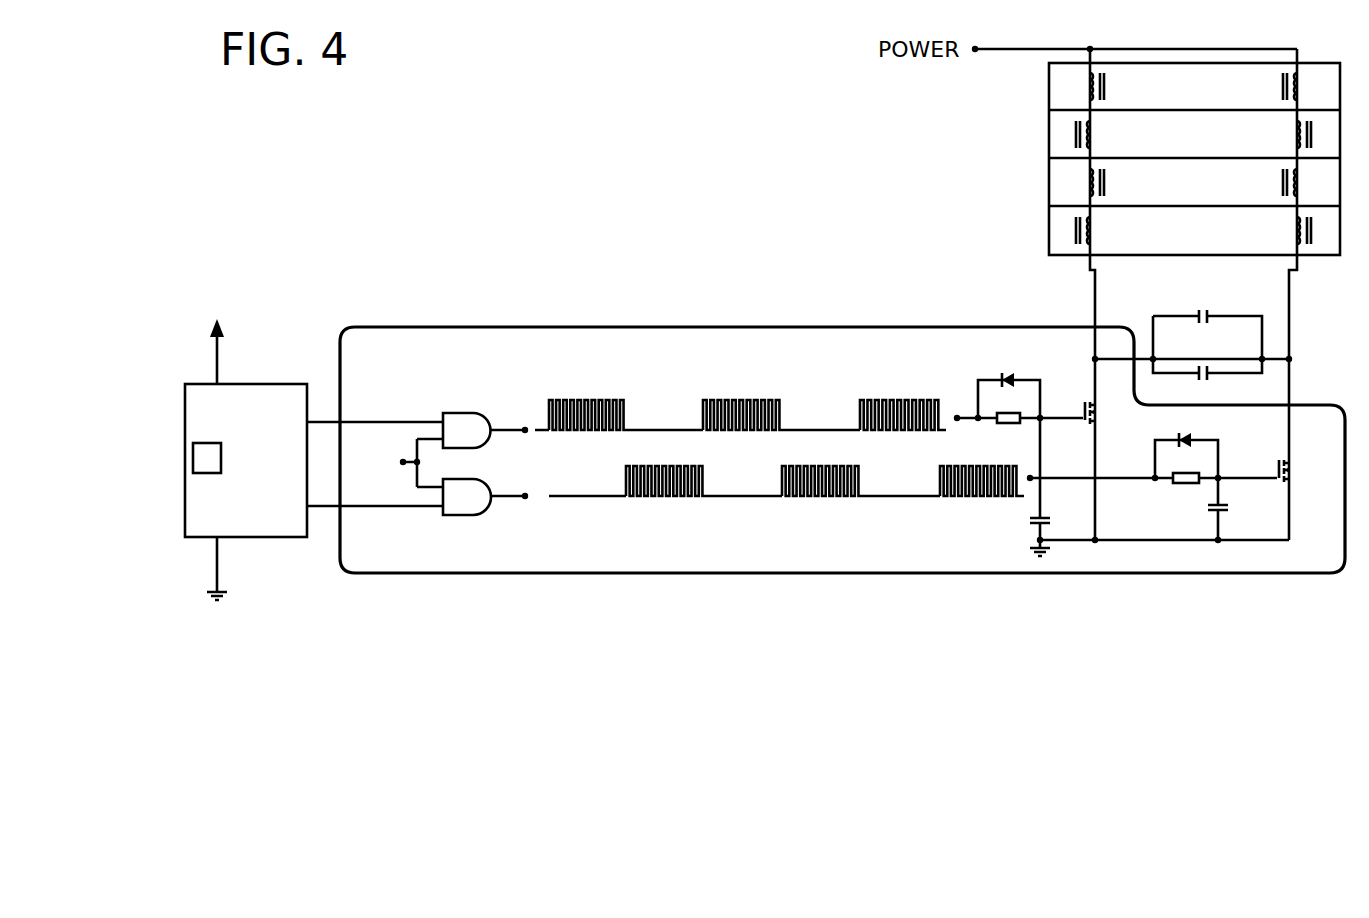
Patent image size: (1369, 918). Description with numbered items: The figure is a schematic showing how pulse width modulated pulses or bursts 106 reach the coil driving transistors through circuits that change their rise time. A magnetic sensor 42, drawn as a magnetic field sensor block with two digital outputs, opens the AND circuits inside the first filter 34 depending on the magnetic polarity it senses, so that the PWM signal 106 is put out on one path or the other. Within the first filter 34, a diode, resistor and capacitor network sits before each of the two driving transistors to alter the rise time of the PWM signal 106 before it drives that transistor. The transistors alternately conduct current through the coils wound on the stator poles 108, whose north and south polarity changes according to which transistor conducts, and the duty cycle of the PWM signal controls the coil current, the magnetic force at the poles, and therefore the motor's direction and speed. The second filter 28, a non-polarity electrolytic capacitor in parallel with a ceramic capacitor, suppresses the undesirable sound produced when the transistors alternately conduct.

The magnetic sensor 42 is at (180, 382).
The first filter 34 is at (826, 336).
The PWM pulses 106 is at (668, 500).
The stator poles 108 is at (1178, 63).
The second filter 28 is at (1265, 348).